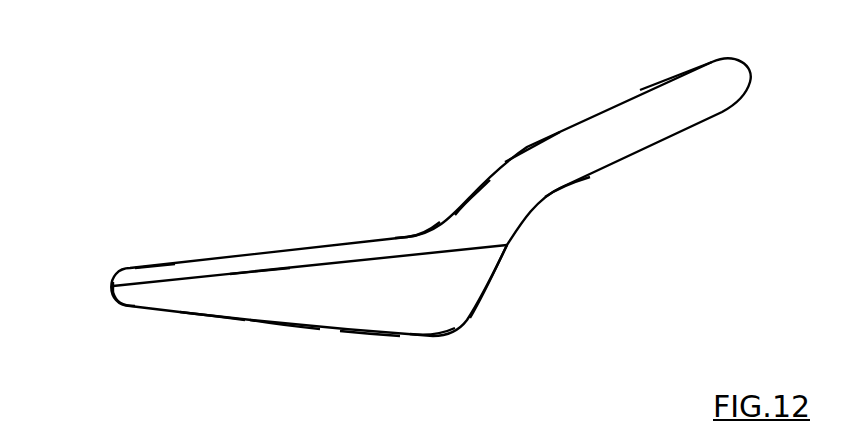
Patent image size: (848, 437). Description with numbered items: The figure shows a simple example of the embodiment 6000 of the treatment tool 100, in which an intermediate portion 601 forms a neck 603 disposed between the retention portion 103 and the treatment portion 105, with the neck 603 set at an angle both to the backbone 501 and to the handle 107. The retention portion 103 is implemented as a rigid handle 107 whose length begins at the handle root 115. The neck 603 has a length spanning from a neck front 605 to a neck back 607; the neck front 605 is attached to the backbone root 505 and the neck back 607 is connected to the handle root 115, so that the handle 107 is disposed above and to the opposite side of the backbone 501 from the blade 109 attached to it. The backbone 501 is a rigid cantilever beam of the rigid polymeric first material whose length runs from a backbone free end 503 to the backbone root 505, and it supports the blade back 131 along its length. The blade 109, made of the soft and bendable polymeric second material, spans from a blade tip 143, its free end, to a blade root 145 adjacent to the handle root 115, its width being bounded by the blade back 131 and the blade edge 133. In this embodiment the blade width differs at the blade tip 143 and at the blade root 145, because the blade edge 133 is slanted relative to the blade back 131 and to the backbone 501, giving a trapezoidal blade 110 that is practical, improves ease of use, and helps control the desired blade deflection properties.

The embodiment 6000 is at (275, 110).
The treatment tool 100 is at (365, 130).
The retention portion 103 is at (588, 100).
The treatment portion 105 is at (193, 218).
The handle 107 is at (680, 93).
The blade 109 is at (213, 303).
The trapezoidal blade 110 is at (380, 315).
The handle root 115 is at (543, 187).
The blade back 131 is at (277, 270).
The blade edge 133 is at (295, 325).
The blade tip 143 is at (133, 293).
The blade root 145 is at (418, 308).
The backbone 501 is at (163, 275).
The backbone free end 503 is at (118, 279).
The backbone root 505 is at (490, 230).
The intermediate portion 601 is at (552, 240).
The neck 603 is at (488, 205).
The neck front 605 is at (427, 243).
The neck back 607 is at (532, 167).